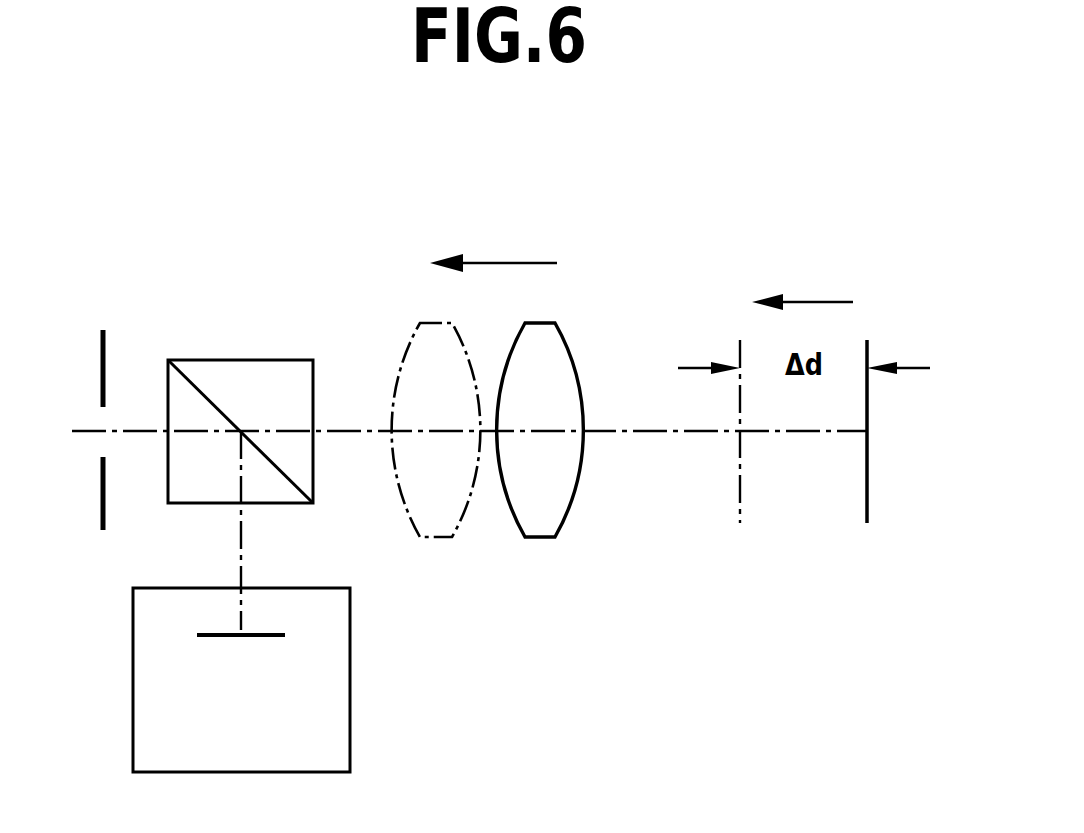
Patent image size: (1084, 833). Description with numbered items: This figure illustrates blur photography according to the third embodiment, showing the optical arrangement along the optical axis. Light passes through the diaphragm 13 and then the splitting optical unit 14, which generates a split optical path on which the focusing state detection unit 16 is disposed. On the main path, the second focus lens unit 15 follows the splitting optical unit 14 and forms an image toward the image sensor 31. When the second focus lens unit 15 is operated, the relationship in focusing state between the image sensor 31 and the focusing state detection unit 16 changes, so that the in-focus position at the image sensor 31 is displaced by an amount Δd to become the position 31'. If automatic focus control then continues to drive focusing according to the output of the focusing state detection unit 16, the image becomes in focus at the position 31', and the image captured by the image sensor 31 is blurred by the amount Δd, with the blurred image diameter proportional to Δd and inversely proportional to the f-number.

The diaphragm 13 is at (106, 353).
The splitting optical unit 14 is at (288, 360).
The second focus lens unit 15 is at (583, 395).
The focusing state detection unit 16 is at (133, 655).
The image sensor 31 is at (917, 459).
The position 31' is at (797, 459).